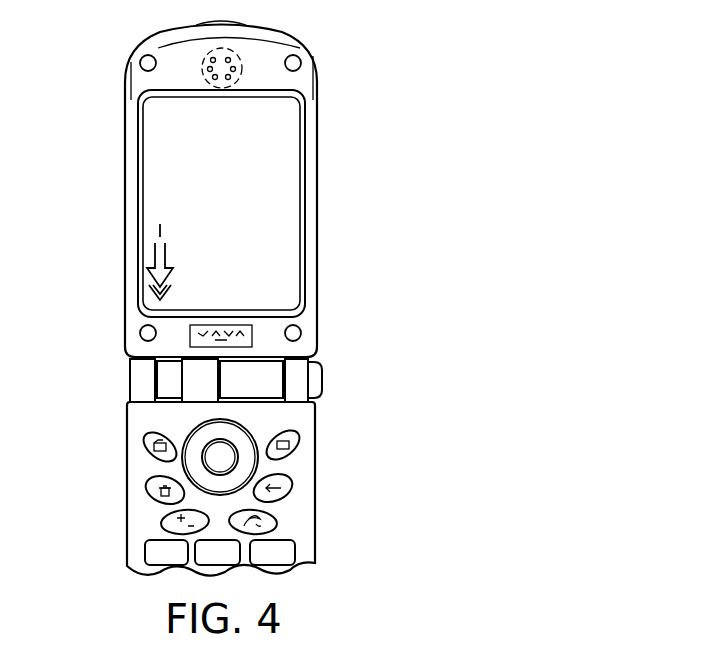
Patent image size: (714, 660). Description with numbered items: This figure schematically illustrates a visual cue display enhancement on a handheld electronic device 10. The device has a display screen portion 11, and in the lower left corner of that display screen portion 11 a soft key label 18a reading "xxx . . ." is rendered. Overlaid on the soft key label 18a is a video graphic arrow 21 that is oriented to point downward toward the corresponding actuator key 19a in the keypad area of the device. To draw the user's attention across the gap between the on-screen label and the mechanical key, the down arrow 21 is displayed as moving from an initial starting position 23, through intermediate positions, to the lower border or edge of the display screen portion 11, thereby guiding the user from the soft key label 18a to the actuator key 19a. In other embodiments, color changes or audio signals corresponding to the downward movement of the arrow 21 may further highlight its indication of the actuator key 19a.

The handheld electronic device 10 is at (346, 59).
The display screen portion 11 is at (293, 155).
The soft key label 18a is at (137, 298).
The actuator key 19a is at (142, 447).
The video graphic arrow 21 is at (167, 260).
The initial starting position 23 is at (159, 230).